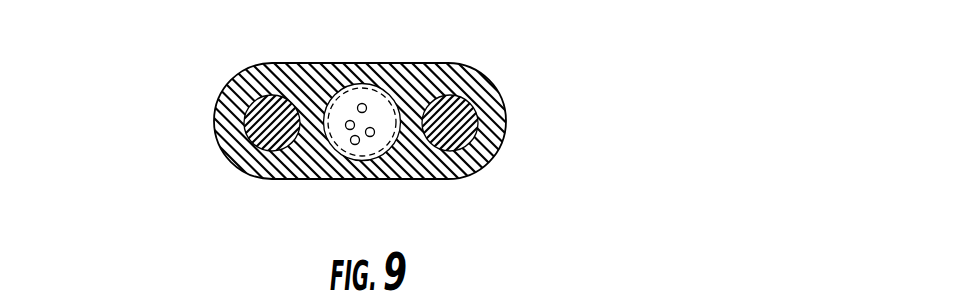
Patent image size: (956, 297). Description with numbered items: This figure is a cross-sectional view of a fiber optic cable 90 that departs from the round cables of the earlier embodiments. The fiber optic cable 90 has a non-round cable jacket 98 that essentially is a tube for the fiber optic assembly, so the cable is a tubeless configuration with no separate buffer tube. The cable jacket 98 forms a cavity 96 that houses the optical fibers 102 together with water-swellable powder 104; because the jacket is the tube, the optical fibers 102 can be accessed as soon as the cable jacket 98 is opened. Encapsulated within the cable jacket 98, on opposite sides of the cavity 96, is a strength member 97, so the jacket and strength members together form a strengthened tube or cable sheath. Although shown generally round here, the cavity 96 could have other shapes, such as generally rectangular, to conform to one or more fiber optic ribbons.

The fiber optic cable 90 is at (145, 78).
The cavity 96 is at (350, 98).
The strength member 97 is at (277, 152).
The cable jacket 98 is at (260, 170).
The optical fibers 102 is at (354, 122).
The water-swellable powder 104 is at (354, 128).